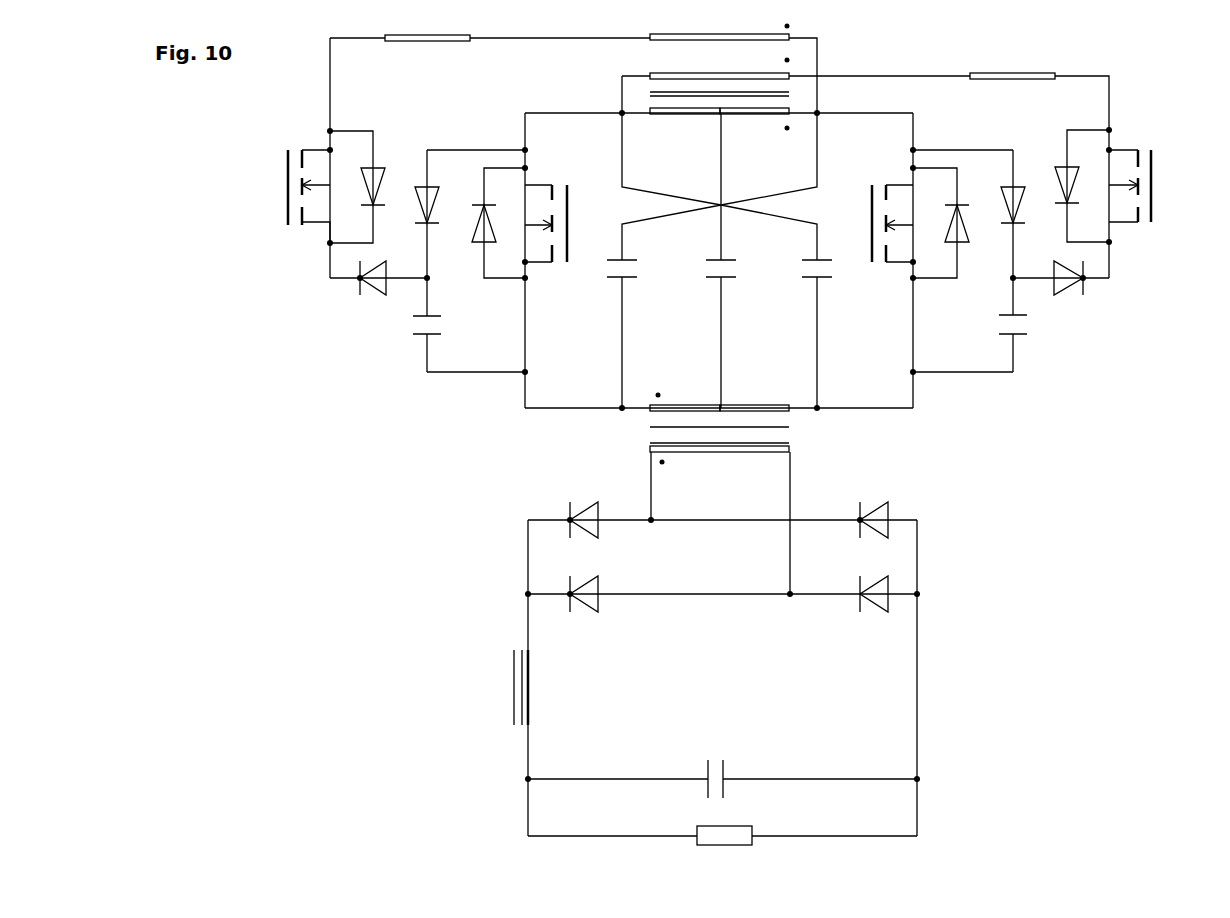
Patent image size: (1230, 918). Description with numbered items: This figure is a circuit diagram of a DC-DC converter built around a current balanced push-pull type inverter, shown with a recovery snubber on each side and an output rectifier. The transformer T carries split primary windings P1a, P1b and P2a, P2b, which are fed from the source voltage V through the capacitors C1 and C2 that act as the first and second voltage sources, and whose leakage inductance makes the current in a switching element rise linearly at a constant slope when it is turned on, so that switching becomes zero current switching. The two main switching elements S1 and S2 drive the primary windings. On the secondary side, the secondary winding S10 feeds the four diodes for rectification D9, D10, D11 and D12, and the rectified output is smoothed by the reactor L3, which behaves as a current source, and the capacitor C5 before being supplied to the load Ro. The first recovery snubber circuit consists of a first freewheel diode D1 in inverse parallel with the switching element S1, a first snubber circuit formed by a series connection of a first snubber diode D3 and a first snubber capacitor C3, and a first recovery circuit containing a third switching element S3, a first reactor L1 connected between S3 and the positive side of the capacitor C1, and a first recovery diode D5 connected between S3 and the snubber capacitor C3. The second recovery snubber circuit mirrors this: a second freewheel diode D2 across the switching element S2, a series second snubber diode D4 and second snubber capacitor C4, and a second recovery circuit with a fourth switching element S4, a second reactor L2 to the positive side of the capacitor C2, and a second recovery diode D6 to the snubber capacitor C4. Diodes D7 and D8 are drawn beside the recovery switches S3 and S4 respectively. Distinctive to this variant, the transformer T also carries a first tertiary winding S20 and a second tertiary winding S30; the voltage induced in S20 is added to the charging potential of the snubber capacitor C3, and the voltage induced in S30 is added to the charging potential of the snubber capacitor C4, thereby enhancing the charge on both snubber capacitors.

The first reactor L1 is at (427, 25).
The second reactor L2 is at (1012, 62).
The reactor for smoothing L3 is at (496, 687).
The switching element S1 is at (561, 223).
The switching element S2 is at (875, 223).
The third switching element S3 is at (285, 196).
The fourth switching element S4 is at (1152, 186).
The secondary winding S10 is at (720, 520).
The first tertiary winding S20 is at (719, 24).
The second tertiary winding S30 is at (719, 61).
The first freewheel diode D1 is at (498, 199).
The second freewheel diode D2 is at (941, 199).
The first snubber diode D3 is at (426, 218).
The second snubber diode D4 is at (1014, 218).
The first recovery diode D5 is at (378, 295).
The second recovery diode D6 is at (1061, 295).
The diode D7 is at (357, 163).
The diode D8 is at (1082, 162).
The diode for rectification D9 is at (600, 527).
The diode for rectification D10 is at (849, 527).
The diode for rectification D11 is at (607, 601).
The diode for rectification D12 is at (849, 601).
The capacitor C1 is at (639, 334).
The capacitor C2 is at (801, 334).
The first snubber capacitor C3 is at (445, 339).
The second snubber capacitor C4 is at (995, 339).
The capacitor C5 is at (722, 773).
The primary winding P1a is at (768, 184).
The primary winding P1b is at (671, 184).
The primary winding P2a is at (754, 396).
The primary winding P2b is at (685, 396).
The voltage V is at (723, 260).
The transformer T is at (703, 267).
The load Ro is at (722, 855).